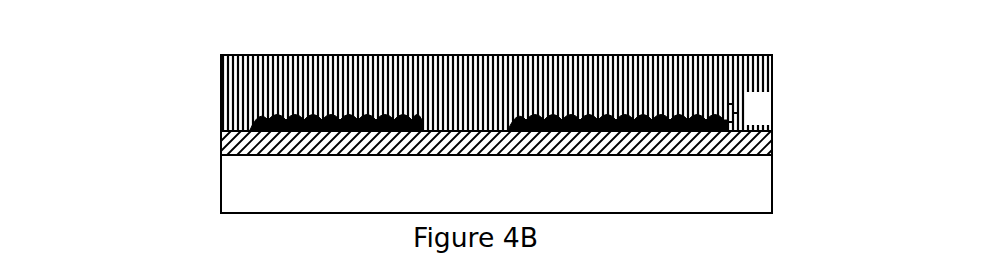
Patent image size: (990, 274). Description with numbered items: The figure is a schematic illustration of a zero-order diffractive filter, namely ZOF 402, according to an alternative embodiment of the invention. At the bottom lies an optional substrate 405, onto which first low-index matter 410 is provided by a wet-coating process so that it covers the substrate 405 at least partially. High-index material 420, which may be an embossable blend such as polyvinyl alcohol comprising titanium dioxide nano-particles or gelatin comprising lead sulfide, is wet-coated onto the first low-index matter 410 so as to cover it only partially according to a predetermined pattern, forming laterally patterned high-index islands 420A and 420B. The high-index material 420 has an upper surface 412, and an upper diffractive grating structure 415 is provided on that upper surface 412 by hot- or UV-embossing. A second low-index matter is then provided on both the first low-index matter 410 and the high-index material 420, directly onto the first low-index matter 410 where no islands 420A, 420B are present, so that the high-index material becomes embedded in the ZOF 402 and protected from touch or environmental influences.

The zero-order diffractive filter 402 is at (828, 148).
The substrate 405 is at (221, 185).
The first low-index matter 410 is at (222, 148).
The upper surface 412 is at (238, 128).
The upper diffractive grating structure 415 is at (763, 112).
The high-index material 420 is at (268, 107).
The high-index island 420A is at (340, 103).
The high-index island 420B is at (638, 110).